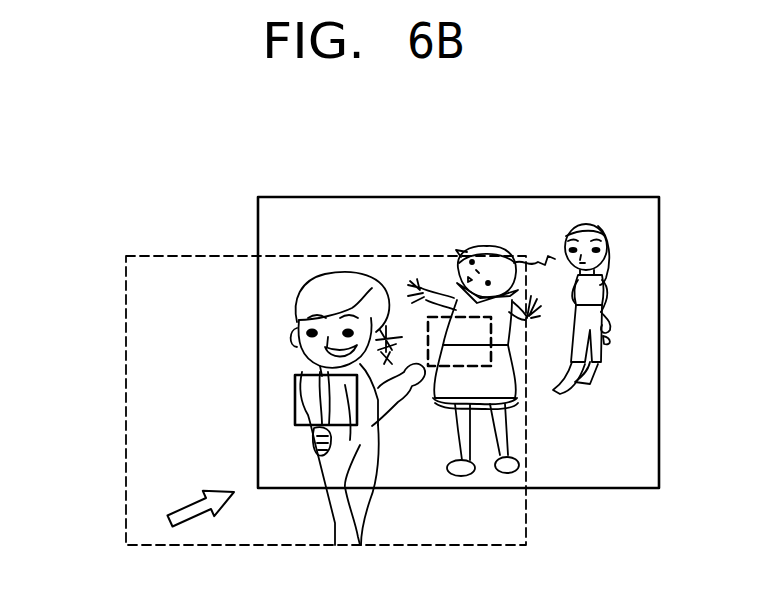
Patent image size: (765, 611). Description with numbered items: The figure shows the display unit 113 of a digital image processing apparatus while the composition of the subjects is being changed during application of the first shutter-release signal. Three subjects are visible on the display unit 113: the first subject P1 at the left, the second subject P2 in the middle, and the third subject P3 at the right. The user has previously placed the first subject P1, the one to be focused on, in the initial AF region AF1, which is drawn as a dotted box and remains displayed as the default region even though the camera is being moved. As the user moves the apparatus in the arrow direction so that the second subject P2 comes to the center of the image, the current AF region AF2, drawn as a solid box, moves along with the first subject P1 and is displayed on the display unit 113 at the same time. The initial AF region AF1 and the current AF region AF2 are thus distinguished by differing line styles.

The display unit 113 is at (583, 490).
The first subject P1 is at (330, 273).
The second subject P2 is at (490, 246).
The third subject P3 is at (583, 223).
The initial AF region AF1 is at (453, 317).
The current AF region AF2 is at (295, 418).